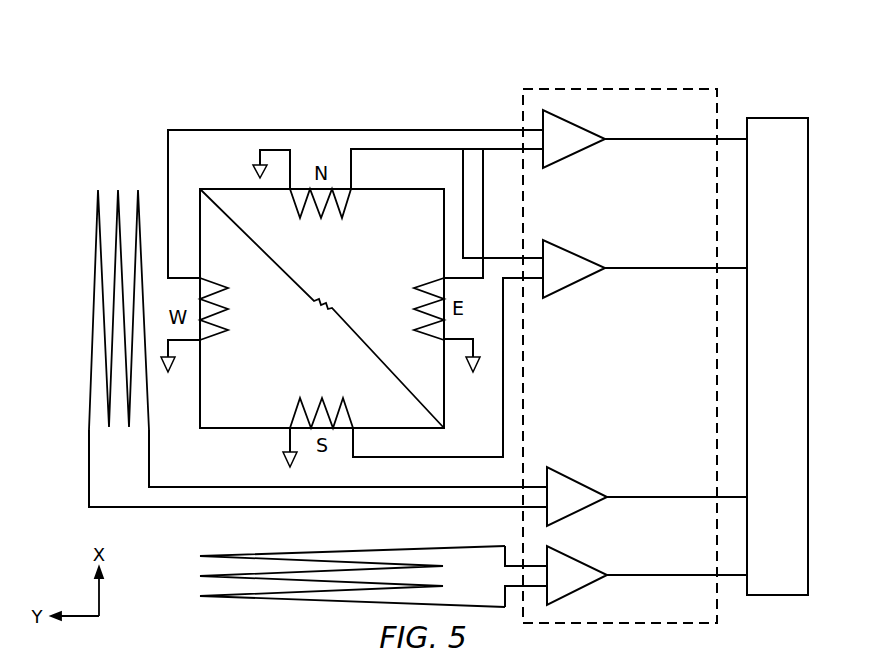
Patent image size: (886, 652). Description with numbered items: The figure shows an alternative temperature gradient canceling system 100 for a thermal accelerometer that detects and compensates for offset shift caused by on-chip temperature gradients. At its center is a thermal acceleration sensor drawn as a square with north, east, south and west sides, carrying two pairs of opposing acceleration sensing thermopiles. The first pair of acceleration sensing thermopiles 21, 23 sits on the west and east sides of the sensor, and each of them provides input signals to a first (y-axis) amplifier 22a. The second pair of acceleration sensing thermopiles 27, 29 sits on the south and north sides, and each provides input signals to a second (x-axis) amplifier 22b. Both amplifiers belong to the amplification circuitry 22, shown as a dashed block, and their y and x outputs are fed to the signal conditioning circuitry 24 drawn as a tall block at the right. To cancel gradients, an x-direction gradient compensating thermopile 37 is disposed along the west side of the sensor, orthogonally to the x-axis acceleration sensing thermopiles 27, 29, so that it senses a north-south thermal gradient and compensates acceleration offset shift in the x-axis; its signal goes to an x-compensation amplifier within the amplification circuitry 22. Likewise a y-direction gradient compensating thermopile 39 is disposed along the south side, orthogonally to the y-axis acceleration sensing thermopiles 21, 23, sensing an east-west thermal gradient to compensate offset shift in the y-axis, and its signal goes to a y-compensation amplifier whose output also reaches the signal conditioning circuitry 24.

The temperature gradient canceling system 100 is at (241, 80).
The acceleration sensing thermopile 21 is at (213, 283).
The acceleration sensing thermopile 23 is at (430, 283).
The acceleration sensing thermopile 27 is at (296, 411).
The acceleration sensing thermopile 29 is at (348, 203).
The x-direction gradient compensating thermopile 37 is at (96, 241).
The y-direction gradient compensating thermopile 39 is at (236, 554).
The amplification circuitry 22 is at (641, 84).
The first (y-axis) amplifier 22a is at (577, 155).
The second (x-axis) amplifier 22b is at (577, 284).
The signal conditioning circuitry 24 is at (767, 367).